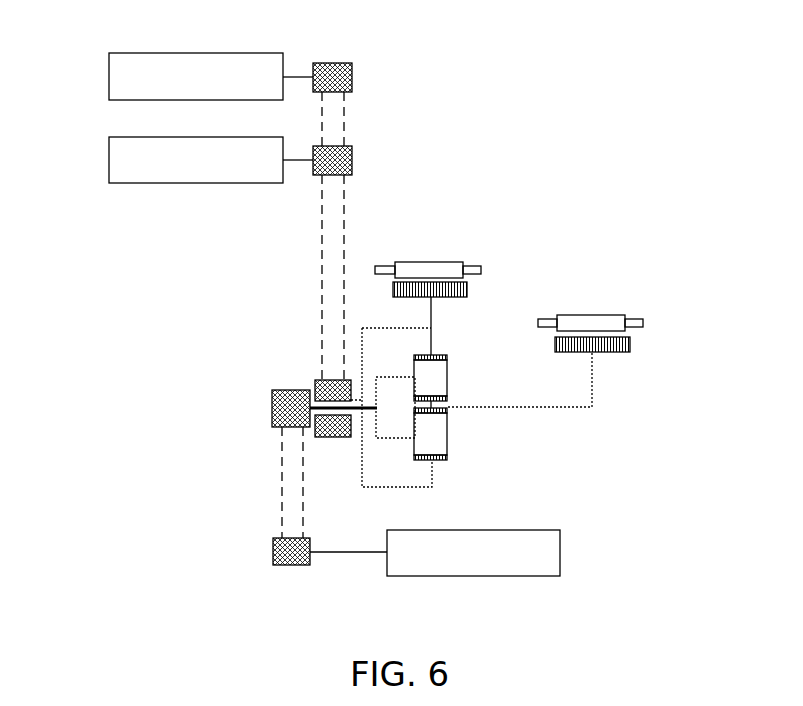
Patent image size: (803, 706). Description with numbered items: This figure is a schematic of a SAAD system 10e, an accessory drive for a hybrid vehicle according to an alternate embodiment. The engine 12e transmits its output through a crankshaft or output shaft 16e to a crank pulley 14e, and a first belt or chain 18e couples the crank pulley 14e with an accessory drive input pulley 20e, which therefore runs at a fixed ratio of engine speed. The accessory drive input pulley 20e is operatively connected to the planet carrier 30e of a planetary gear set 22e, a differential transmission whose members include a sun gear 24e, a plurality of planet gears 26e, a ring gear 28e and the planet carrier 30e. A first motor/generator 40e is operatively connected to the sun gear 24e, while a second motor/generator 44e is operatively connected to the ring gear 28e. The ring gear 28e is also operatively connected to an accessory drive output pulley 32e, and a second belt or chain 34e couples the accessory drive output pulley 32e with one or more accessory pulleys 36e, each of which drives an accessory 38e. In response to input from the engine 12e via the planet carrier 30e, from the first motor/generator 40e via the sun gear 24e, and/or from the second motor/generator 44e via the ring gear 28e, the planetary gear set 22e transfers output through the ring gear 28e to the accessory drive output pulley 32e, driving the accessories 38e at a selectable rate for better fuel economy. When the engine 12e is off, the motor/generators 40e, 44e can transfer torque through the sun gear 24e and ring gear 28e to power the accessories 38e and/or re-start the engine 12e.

The SAAD system 10e is at (590, 142).
The engine 12e is at (525, 576).
The crank pulley 14e is at (288, 565).
The output shaft 16e is at (368, 552).
The first belt 18e is at (281, 500).
The accessory drive input pulley 20e is at (272, 400).
The planetary gear set 22e is at (482, 488).
The sun gear 24e is at (447, 418).
The planet gears 26e is at (440, 372).
The ring gear 28e is at (443, 356).
The planet carrier 30e is at (400, 438).
The accessory drive output pulley 32e is at (330, 437).
The second belt 34e is at (347, 220).
The accessory pulleys 36e is at (343, 63).
The accessories 38e is at (115, 53).
The first motor/generator 40e is at (613, 313).
The second motor/generator 44e is at (452, 262).